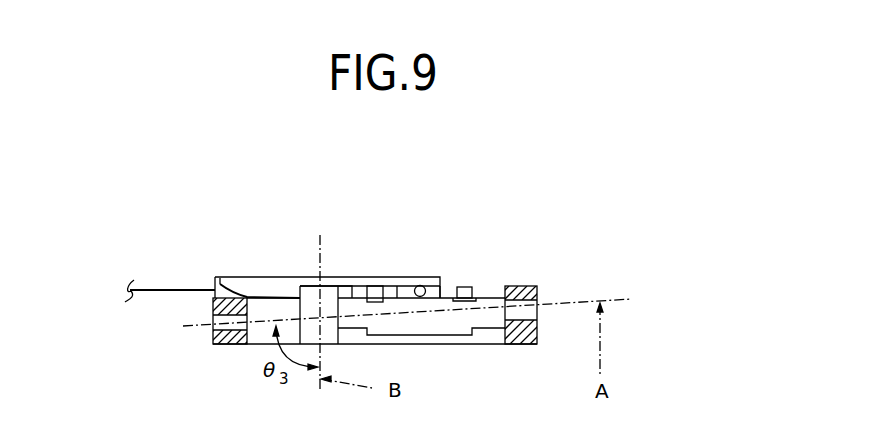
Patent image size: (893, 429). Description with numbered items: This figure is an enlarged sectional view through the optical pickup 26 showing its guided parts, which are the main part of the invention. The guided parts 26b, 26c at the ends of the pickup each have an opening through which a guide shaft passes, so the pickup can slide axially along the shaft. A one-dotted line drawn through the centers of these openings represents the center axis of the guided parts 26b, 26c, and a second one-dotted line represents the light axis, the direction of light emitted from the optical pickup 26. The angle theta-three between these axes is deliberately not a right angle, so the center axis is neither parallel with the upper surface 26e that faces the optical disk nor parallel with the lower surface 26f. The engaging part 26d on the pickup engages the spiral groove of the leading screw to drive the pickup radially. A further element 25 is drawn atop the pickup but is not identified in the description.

The optical pickup 26 is at (497, 207).
The guided part 26b is at (213, 330).
The guided part 26c is at (538, 302).
The engaging part 26d is at (423, 282).
The upper surface 26e is at (267, 277).
The lower surface 26f is at (417, 345).
The projection 25 is at (450, 290).